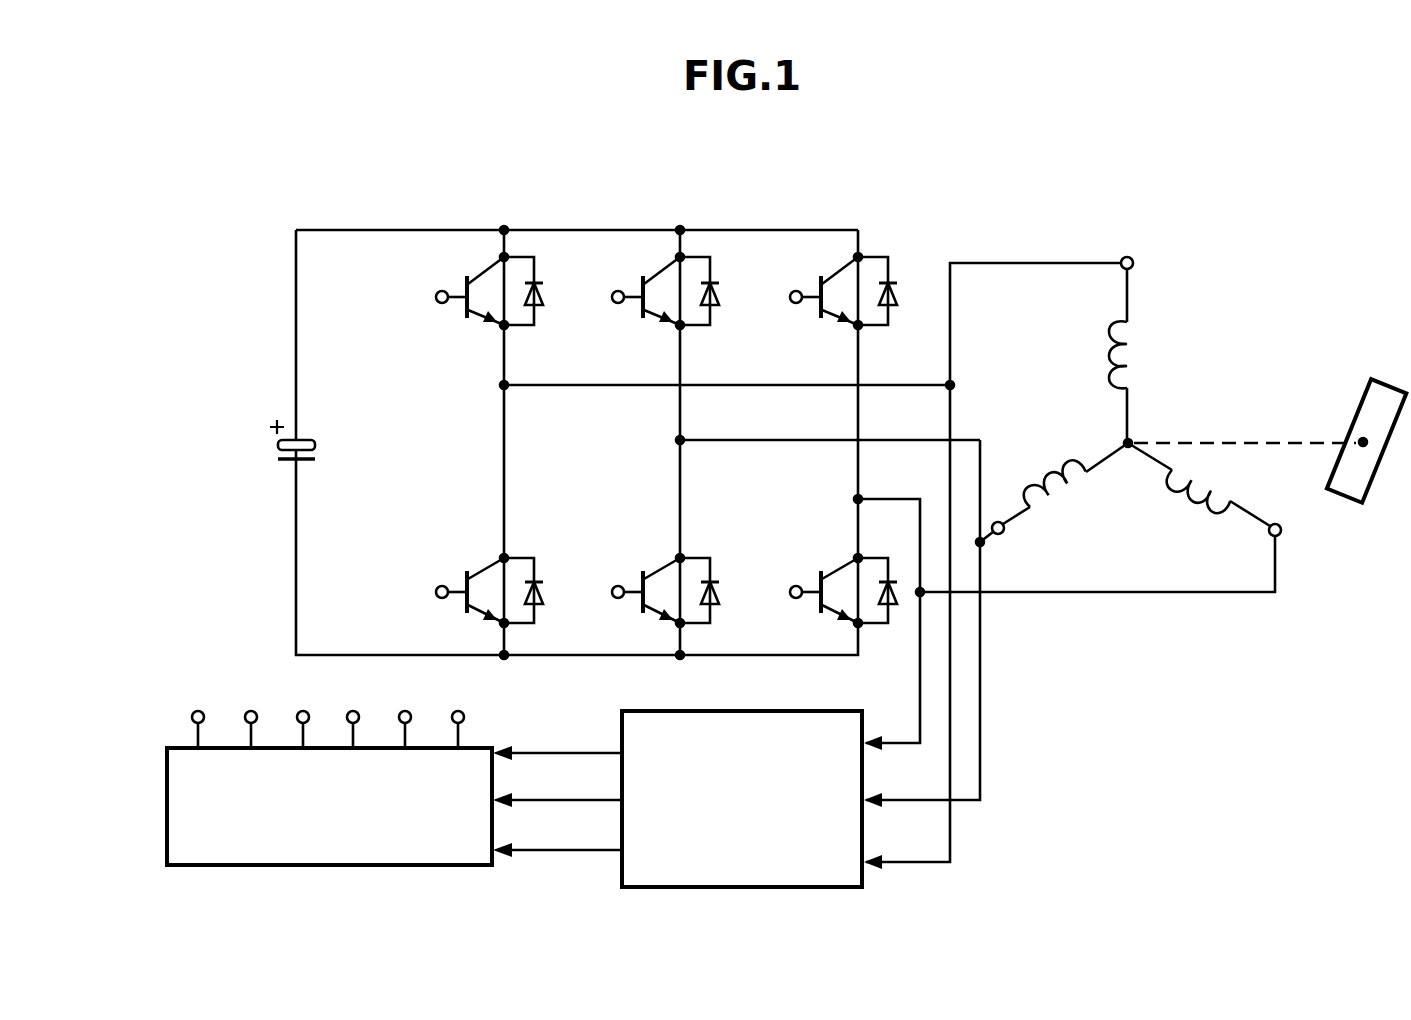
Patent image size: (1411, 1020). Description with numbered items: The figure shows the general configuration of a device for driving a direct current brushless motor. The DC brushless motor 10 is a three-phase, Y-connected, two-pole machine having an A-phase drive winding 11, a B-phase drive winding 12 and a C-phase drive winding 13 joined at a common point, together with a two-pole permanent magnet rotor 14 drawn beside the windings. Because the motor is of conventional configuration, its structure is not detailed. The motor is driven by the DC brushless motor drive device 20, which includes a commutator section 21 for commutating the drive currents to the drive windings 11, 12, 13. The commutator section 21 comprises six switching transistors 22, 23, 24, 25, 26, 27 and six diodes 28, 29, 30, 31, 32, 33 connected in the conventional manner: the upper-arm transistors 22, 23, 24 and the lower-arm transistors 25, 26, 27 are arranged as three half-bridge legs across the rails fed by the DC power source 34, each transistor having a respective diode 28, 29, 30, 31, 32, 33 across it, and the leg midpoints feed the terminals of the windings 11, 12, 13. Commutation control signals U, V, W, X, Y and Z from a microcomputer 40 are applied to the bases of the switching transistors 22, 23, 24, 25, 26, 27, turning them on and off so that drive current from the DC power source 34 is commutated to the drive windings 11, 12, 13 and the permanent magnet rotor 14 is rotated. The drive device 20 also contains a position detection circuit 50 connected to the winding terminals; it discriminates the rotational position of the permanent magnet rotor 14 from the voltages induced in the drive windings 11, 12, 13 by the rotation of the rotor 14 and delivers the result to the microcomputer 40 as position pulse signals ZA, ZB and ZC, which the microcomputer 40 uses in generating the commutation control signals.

The DC brushless motor 10 is at (1216, 261).
The A-phase drive winding 11 is at (1113, 360).
The B-phase drive winding 12 is at (1060, 470).
The C-phase drive winding 13 is at (1185, 496).
The permanent magnet rotor 14 is at (1355, 416).
The DC brushless motor drive device 20 is at (746, 192).
The commutator section 21 is at (454, 212).
The switching transistor 22 is at (480, 313).
The switching transistor 23 is at (652, 313).
The switching transistor 24 is at (826, 313).
The switching transistor 25 is at (463, 580).
The switching transistor 26 is at (638, 580).
The switching transistor 27 is at (820, 580).
The diode 28 is at (541, 304).
The diode 29 is at (718, 304).
The diode 30 is at (903, 304).
The diode 31 is at (540, 584).
The diode 32 is at (714, 578).
The diode 33 is at (896, 580).
The DC power source 34 is at (306, 441).
The microcomputer 40 is at (330, 855).
The position detection circuit 50 is at (761, 875).